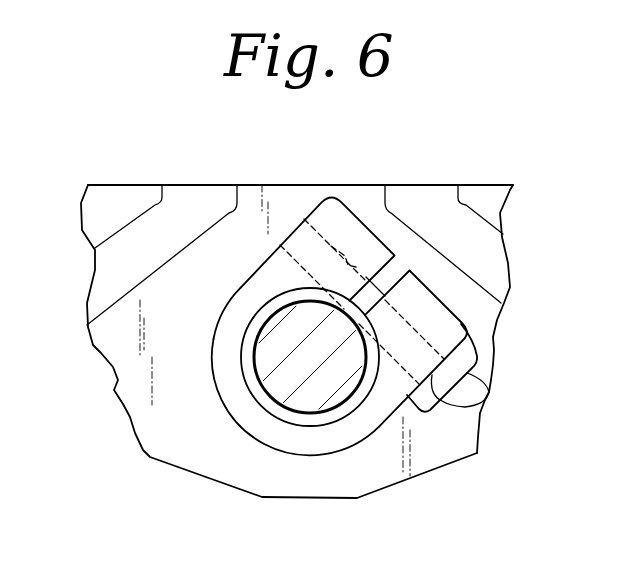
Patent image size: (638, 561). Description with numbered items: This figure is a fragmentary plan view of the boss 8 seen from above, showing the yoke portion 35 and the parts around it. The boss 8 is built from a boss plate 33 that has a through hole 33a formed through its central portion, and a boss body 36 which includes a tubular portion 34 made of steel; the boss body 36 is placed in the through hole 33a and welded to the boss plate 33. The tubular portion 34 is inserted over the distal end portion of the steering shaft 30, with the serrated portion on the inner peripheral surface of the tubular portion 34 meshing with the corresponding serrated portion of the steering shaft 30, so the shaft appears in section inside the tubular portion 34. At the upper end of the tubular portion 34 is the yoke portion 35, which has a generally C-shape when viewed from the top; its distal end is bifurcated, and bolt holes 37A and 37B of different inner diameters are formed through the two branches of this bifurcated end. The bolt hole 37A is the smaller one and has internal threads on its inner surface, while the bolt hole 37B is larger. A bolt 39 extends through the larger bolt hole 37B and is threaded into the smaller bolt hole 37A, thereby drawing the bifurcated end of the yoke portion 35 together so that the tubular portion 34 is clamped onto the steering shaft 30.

The boss 8 is at (248, 167).
The steering shaft 30 is at (254, 348).
The boss plate 33 is at (488, 353).
The through hole 33a is at (222, 388).
The tubular portion 34 is at (261, 390).
The yoke portion 35 is at (488, 400).
The boss body 36 is at (234, 470).
The bolt hole 37A is at (347, 220).
The bolt hole 37B is at (410, 324).
The bolt 39 is at (478, 392).